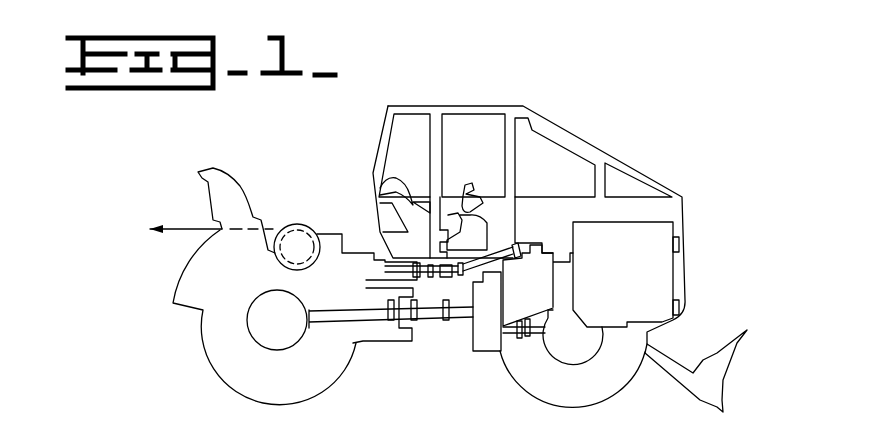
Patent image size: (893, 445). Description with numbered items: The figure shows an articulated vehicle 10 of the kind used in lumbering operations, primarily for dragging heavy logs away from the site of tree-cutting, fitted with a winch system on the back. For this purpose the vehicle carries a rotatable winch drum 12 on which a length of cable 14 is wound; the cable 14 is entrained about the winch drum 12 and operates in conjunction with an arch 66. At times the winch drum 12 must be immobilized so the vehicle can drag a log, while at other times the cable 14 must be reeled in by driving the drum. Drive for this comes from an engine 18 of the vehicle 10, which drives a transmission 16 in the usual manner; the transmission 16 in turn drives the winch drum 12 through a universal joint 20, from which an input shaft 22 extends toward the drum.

The articulated vehicle 10 is at (601, 136).
The winch drum 12 is at (295, 240).
The cable 14 is at (192, 228).
The transmission 16 is at (533, 218).
The engine 18 is at (648, 290).
The universal joint 20 is at (447, 282).
The input shaft 22 is at (396, 270).
The arch 66 is at (228, 191).